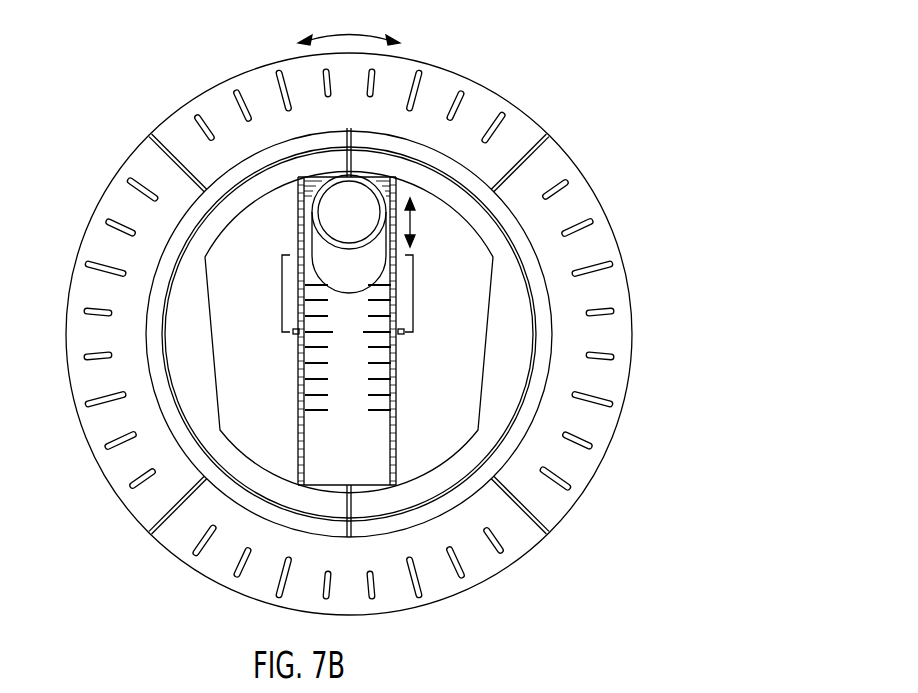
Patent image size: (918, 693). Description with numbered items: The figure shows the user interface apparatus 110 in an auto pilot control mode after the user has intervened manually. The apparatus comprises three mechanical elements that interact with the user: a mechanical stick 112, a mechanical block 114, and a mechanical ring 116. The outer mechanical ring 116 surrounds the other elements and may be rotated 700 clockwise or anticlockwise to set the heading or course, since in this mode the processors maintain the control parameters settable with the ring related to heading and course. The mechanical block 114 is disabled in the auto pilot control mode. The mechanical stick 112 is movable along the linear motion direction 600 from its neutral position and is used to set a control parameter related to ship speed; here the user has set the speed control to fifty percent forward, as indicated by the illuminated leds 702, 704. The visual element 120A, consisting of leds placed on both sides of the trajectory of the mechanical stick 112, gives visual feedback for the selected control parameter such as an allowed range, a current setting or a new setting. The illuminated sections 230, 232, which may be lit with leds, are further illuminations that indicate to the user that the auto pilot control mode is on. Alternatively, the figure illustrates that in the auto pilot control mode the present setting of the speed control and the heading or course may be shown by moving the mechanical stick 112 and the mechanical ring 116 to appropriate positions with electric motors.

The user interface apparatus 110 is at (96, 70).
The mechanical ring 116 is at (66, 355).
The rotation of the mechanical ring 700 is at (349, 35).
The illuminated section 232 is at (352, 163).
The illuminated section 230 is at (352, 501).
The mechanical block 114 is at (292, 332).
The mechanical stick 112 is at (311, 215).
The linear motion direction 600 is at (413, 222).
The illuminated leds 702 is at (282, 295).
The illuminated leds 704 is at (413, 295).
The visual element 120A is at (304, 378).